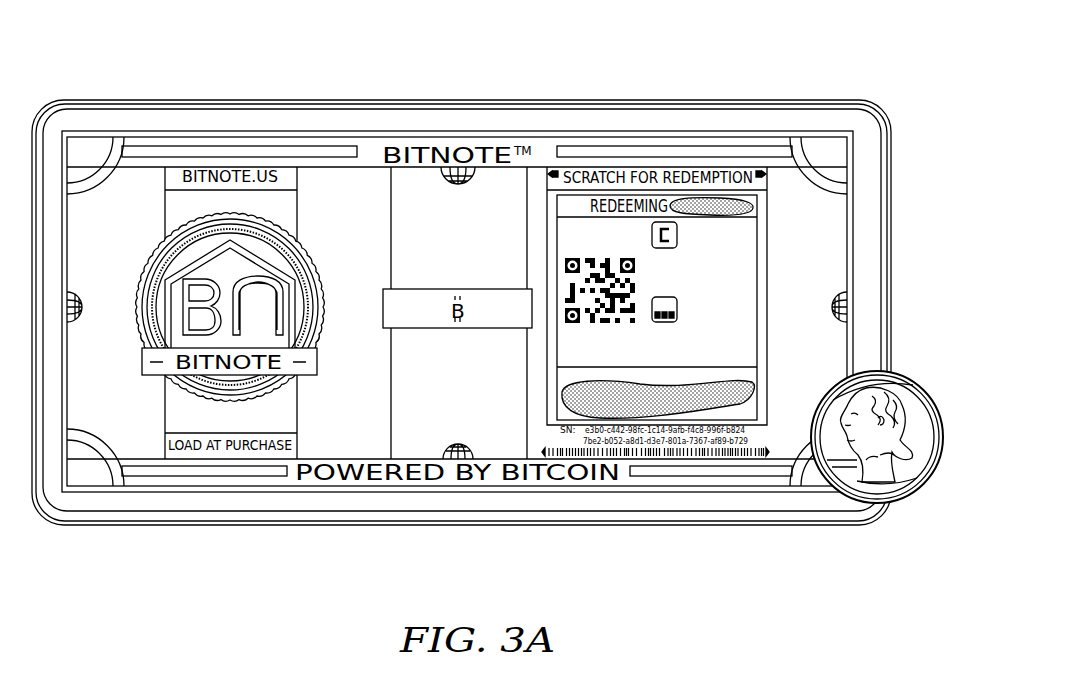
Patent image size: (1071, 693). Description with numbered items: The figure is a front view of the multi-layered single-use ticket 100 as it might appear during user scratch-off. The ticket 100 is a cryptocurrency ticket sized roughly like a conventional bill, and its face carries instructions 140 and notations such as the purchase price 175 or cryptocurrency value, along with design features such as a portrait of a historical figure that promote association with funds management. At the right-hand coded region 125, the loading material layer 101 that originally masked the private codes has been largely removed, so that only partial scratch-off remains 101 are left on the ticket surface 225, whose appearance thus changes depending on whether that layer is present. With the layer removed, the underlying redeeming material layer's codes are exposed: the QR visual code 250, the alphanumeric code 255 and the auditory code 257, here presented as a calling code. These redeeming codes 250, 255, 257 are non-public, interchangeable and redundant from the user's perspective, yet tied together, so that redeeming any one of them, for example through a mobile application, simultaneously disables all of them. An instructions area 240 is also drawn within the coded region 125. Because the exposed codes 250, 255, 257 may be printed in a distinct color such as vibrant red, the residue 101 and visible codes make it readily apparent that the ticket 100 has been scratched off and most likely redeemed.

The ticket 100 is at (146, 70).
The loading material layer 101 is at (700, 202).
The coded region 125 is at (765, 195).
The instructions 140 is at (173, 406).
The purchase price 175 is at (292, 203).
The ticket surface 225 is at (775, 517).
The instructions area 240 is at (726, 375).
The visual code 250 is at (567, 258).
The alphanumeric code 255 is at (738, 320).
The auditory code 257 is at (726, 246).